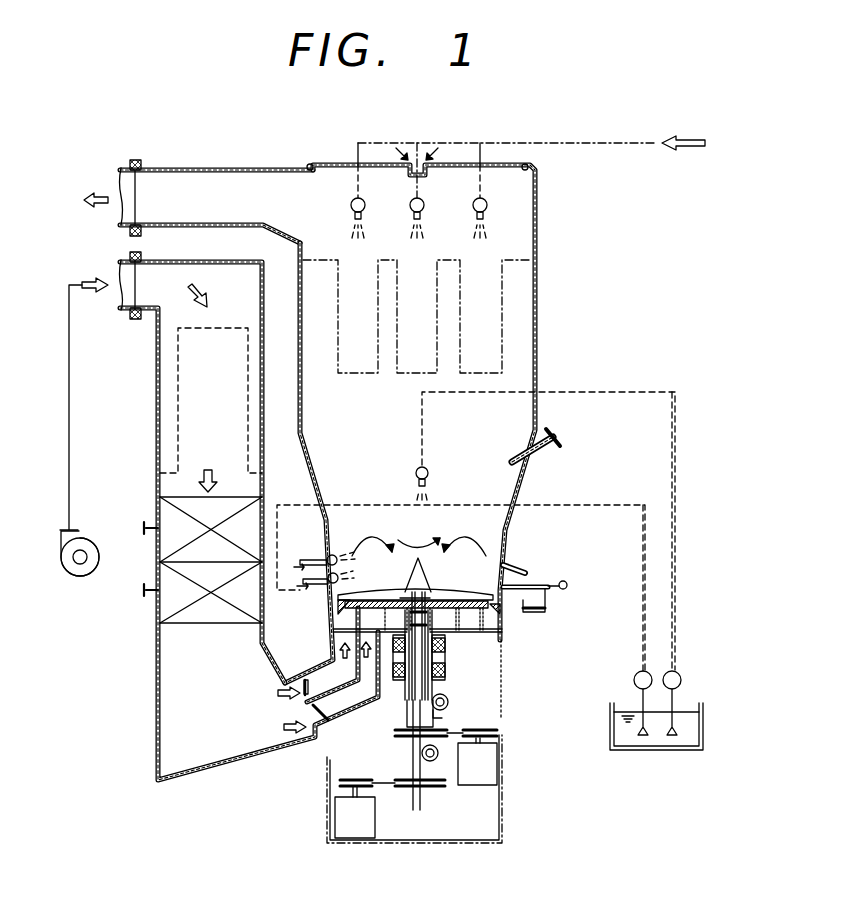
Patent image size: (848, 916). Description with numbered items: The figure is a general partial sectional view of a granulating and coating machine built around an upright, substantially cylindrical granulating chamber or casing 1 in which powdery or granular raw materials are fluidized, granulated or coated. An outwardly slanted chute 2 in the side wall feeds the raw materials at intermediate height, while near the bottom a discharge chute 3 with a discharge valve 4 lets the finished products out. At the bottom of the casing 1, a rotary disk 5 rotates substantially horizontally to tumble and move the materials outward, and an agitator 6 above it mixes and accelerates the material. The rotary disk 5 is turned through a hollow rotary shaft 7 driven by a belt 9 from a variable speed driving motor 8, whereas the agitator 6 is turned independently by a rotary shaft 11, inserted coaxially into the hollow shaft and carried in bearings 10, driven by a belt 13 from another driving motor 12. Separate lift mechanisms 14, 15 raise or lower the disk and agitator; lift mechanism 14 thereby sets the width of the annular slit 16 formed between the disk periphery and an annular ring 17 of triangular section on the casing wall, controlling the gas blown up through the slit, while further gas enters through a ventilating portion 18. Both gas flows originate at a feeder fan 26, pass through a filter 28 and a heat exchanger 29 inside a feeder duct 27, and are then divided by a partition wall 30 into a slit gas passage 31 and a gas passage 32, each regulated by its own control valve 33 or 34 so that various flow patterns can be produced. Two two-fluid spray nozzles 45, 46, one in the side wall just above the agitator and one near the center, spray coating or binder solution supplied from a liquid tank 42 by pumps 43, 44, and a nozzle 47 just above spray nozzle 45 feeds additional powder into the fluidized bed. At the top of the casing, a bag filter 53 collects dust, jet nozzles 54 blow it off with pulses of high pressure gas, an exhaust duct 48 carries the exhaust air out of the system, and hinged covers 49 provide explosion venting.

The granulating chamber or casing 1 is at (540, 354).
The chute 2 is at (556, 460).
The discharge chute 3 is at (548, 600).
The discharge valve 4 is at (515, 568).
The rotary disk 5 is at (400, 598).
The agitator 6 is at (440, 595).
The hollow rotary shaft 7 is at (432, 688).
The driving motor 8 is at (497, 780).
The belt 9 is at (465, 728).
The bearings 10 is at (430, 617).
The rotary shaft 11 is at (420, 805).
The driving motor 12 is at (355, 838).
The belt 13 is at (385, 788).
The lift mechanism 14 is at (448, 700).
The lift mechanism 15 is at (438, 755).
The annular gap or slit 16 is at (338, 605).
The annular ring 17 is at (345, 622).
The ventilating portion 18 is at (466, 607).
The feeder fan 26 is at (80, 577).
The feeder duct 27 is at (155, 697).
The filter 28 is at (178, 397).
The heat exchanger 29 is at (170, 607).
The partition wall 30 is at (300, 722).
The slit gas passage 31 is at (285, 682).
The gas passage 32 is at (358, 708).
The control valve or damper 33 is at (305, 695).
The control valve 34 is at (318, 722).
The liquid tank 42 is at (668, 752).
The pump 43 is at (634, 683).
The pump 44 is at (682, 680).
The spray nozzle 45 is at (325, 580).
The spray nozzle 46 is at (428, 473).
The nozzle 47 is at (328, 555).
The exhaust duct 48 is at (184, 168).
The covers 49 is at (463, 165).
The bag filter 53 is at (505, 302).
The jet nozzles 54 is at (487, 208).